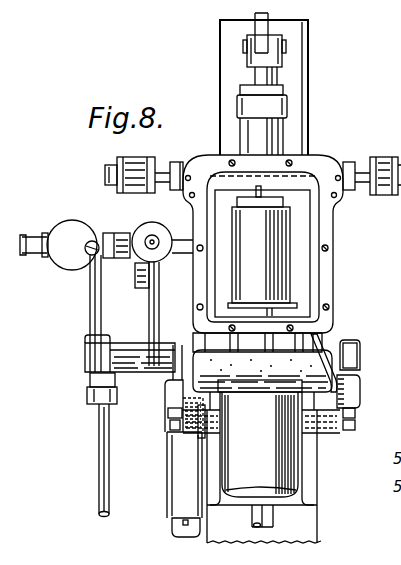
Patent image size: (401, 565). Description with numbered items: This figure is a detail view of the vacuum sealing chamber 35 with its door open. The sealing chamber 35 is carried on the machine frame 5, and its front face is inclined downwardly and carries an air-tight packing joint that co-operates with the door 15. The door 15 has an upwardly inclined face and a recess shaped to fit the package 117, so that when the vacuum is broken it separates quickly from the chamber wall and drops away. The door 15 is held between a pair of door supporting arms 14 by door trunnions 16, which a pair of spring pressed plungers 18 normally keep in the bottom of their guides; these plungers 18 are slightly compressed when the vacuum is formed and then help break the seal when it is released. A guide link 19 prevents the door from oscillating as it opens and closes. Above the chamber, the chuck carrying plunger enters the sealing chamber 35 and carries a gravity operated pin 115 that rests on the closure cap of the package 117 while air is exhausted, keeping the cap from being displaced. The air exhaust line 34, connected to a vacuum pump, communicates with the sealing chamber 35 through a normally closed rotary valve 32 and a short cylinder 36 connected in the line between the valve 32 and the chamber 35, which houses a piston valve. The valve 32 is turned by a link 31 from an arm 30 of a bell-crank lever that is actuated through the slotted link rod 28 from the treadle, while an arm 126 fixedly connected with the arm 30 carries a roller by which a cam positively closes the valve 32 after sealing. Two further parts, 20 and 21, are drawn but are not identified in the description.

The machine frame 5 is at (316, 521).
The door supporting arms 14 is at (178, 375).
The door 15 is at (310, 452).
The door trunnions 16 is at (170, 423).
The spring pressed plungers 18 is at (170, 413).
The guide link 19 is at (322, 338).
The cylinder 20 is at (168, 470).
The cap 21 is at (172, 528).
The slotted link rod 28 is at (99, 461).
The arm 30 is at (106, 352).
The link 31 is at (90, 314).
The rotary valve 32 is at (67, 224).
The air exhaust line 34 is at (180, 236).
The sealing chamber 35 is at (310, 241).
The short cylinder 36 is at (142, 254).
The gravity operated pin 115 is at (262, 190).
The package 117 is at (288, 262).
The arm 126 is at (148, 307).